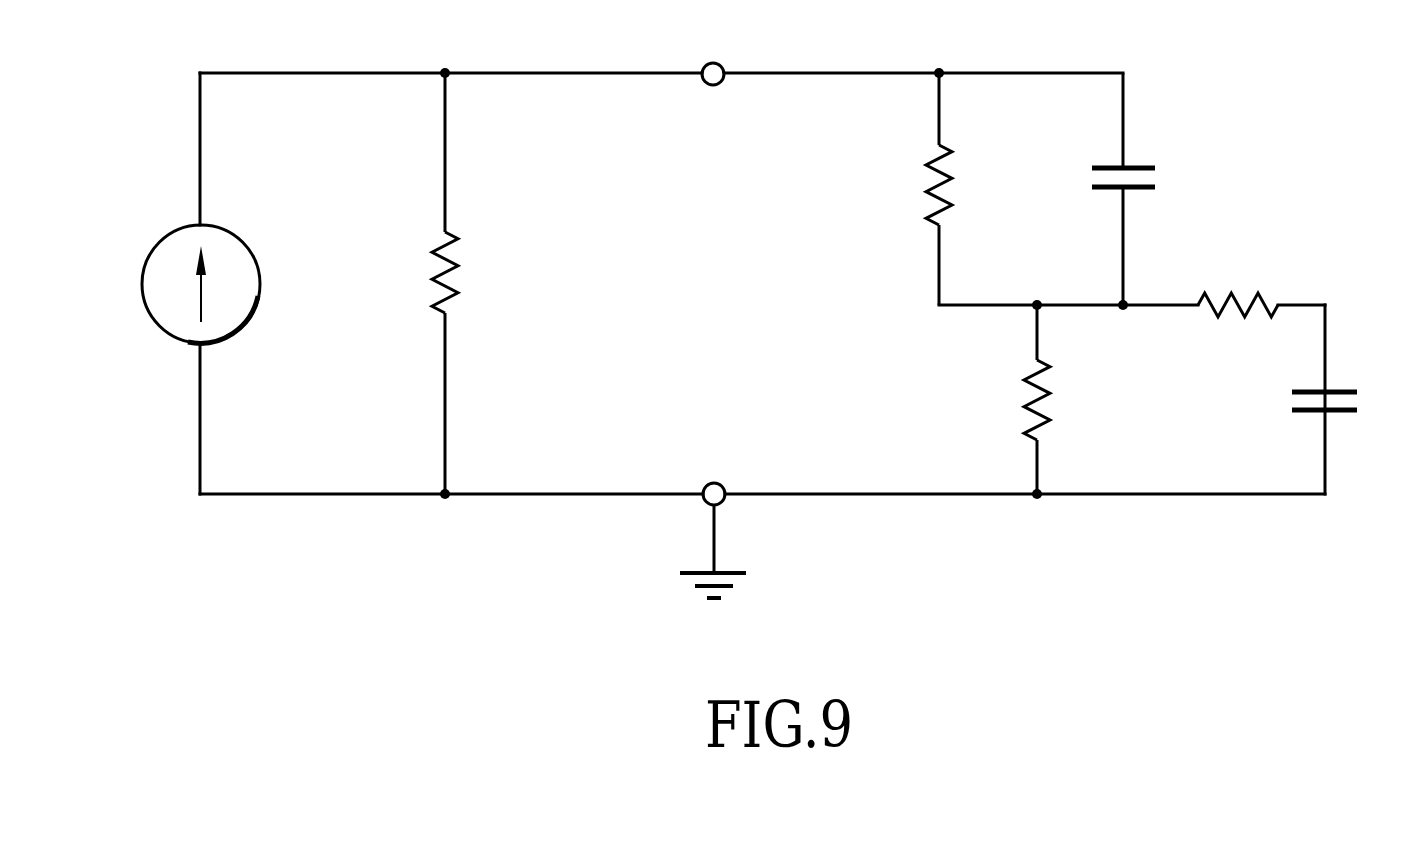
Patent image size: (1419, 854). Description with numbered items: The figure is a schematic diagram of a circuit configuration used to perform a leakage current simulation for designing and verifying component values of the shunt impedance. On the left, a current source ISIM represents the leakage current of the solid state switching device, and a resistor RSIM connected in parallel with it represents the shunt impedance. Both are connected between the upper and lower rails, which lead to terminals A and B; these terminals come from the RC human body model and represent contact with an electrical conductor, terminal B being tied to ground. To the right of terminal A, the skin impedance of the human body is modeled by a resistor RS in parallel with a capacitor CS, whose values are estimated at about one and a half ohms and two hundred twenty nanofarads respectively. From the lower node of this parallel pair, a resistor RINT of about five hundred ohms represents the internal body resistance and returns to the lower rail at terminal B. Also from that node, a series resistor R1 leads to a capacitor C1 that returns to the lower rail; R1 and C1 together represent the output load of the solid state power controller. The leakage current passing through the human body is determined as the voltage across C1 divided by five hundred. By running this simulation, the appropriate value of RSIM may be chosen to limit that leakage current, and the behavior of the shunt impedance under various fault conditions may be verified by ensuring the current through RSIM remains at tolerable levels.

The simulated leakage current source ISIM is at (170, 284).
The simulated shunt impedance RSIM is at (479, 283).
The skin resistance RS is at (911, 189).
The skin capacitance CS is at (1137, 189).
The output load resistor R1 is at (1235, 286).
The internal body resistance RINT is at (1010, 399).
The output load capacitor C1 is at (1344, 408).
The terminal A is at (713, 53).
The terminal B is at (713, 521).